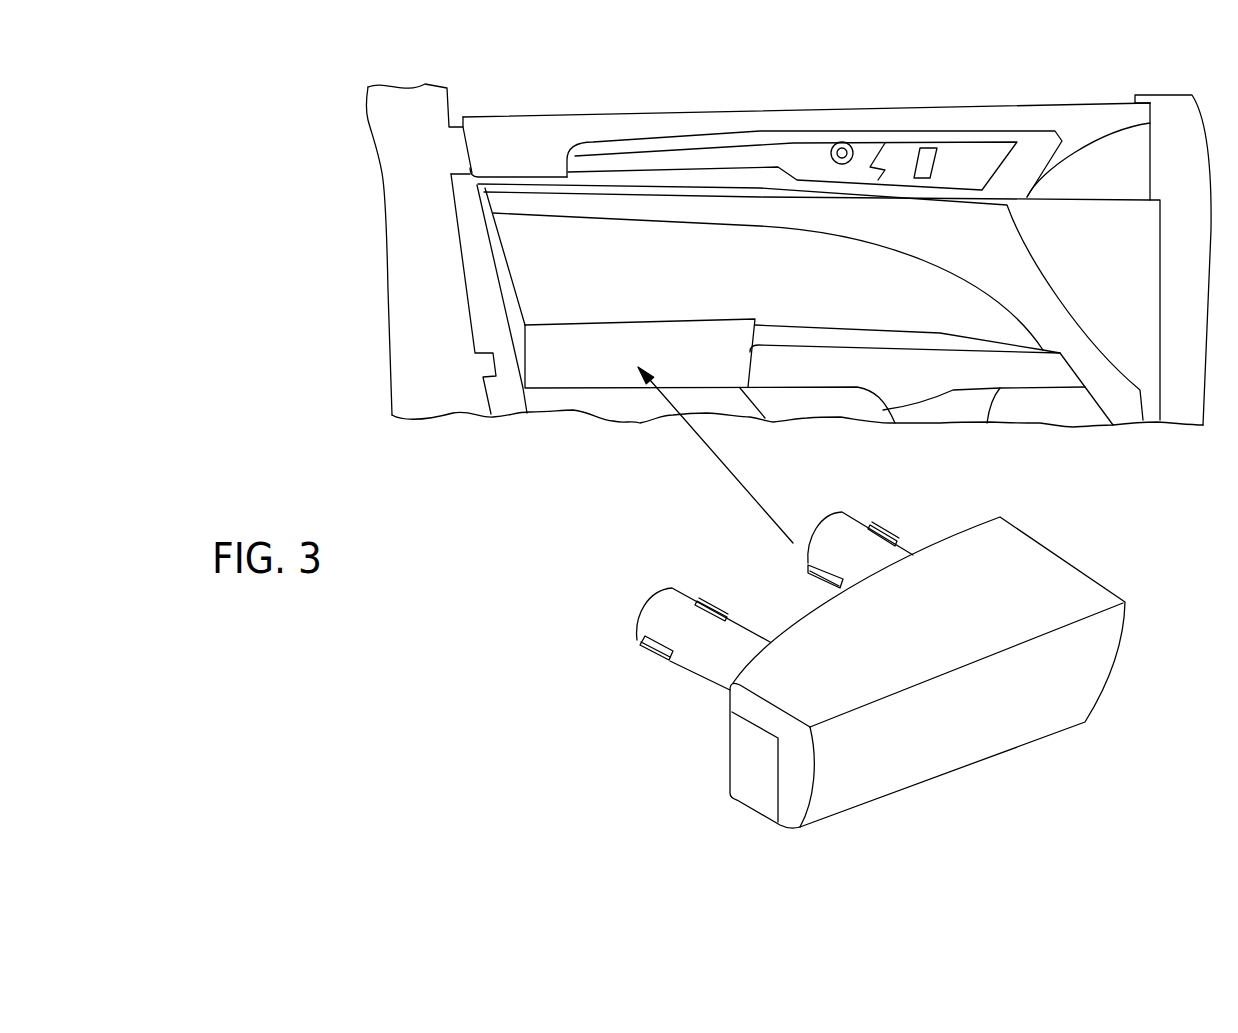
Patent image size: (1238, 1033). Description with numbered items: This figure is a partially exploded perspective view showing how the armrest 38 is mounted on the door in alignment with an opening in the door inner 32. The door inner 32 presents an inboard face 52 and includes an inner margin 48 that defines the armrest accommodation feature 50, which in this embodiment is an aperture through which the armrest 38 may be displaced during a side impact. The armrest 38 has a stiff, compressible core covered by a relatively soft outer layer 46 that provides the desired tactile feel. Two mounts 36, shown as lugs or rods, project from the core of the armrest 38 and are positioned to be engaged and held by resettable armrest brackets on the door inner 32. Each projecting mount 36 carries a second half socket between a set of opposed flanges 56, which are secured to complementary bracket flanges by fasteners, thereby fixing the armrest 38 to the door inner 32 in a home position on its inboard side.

The door inner 32 is at (547, 277).
The mount 36 is at (712, 672).
The armrest 38 is at (887, 637).
The outer layer 46 is at (952, 733).
The inner margin 48 is at (678, 320).
The armrest accommodation feature 50 is at (590, 363).
The inboard face 52 is at (585, 233).
The opposed flanges 56 is at (812, 575).